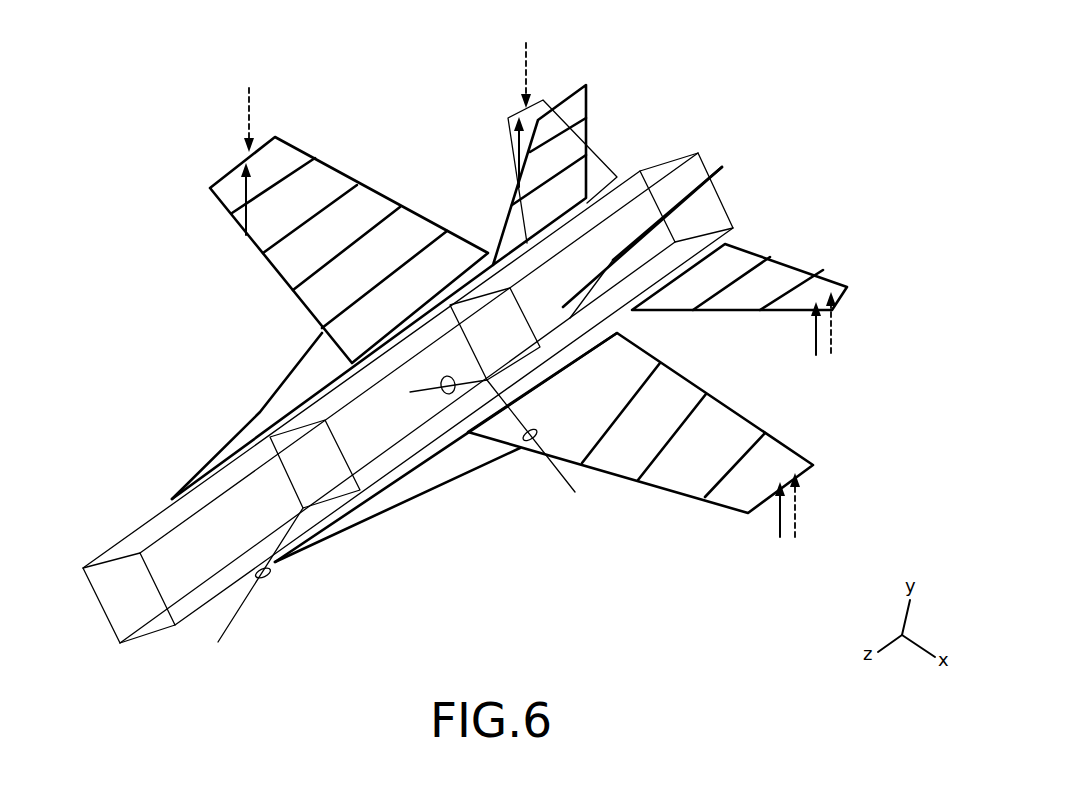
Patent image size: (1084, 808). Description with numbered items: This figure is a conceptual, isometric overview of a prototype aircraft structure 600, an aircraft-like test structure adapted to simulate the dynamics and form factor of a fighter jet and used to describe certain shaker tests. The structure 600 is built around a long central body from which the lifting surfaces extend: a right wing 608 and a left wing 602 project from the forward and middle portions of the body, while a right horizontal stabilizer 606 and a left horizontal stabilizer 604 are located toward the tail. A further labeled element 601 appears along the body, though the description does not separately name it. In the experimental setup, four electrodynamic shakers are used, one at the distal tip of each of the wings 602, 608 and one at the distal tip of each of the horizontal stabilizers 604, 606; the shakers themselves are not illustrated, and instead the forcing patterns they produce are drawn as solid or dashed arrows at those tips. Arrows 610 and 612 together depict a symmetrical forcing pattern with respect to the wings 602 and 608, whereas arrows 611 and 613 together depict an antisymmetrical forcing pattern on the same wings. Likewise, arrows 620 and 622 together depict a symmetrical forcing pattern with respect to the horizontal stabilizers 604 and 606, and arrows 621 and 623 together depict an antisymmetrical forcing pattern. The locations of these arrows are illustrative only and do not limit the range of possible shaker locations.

The prototype aircraft structure 600 is at (740, 93).
The fuselage 601 is at (378, 485).
The left wing 602 is at (618, 467).
The left horizontal stabilizer 604 is at (792, 268).
The right horizontal stabilizer 606 is at (602, 168).
The right wing 608 is at (315, 298).
The arrow 610 is at (777, 525).
The arrow 611 is at (798, 513).
The arrow 612 is at (245, 186).
The arrow 613 is at (252, 110).
The arrow 620 is at (813, 342).
The arrow 621 is at (838, 335).
The arrow 622 is at (518, 142).
The arrow 623 is at (528, 68).